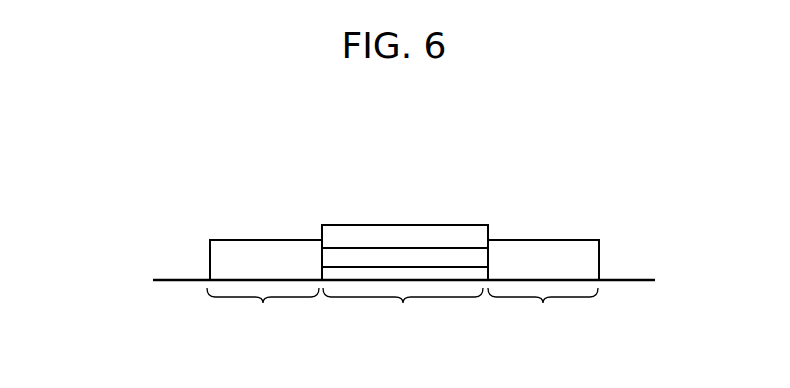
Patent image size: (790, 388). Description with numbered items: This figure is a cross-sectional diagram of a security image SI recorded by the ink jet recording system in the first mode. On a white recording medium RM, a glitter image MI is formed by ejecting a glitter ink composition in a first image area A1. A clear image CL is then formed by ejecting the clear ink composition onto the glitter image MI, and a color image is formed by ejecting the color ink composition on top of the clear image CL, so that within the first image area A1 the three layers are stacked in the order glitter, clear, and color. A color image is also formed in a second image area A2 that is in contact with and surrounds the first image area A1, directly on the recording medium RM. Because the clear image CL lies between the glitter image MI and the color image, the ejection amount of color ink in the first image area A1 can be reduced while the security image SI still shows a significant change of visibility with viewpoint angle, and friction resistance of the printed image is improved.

The recording medium RM is at (632, 280).
The security image SI is at (501, 173).
The clear image CL is at (454, 258).
The glitter image MI is at (422, 273).
The first image area A1 is at (403, 309).
The second image area A2 is at (402, 309).